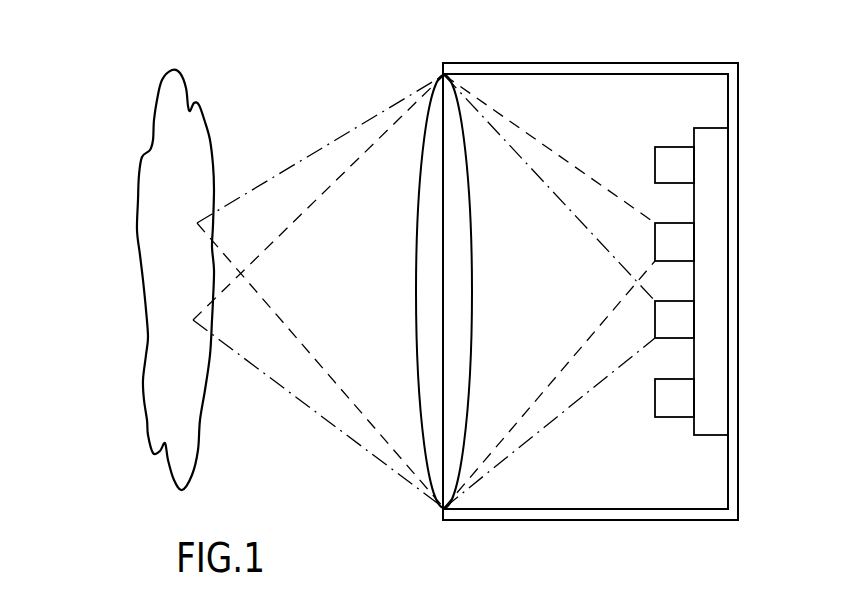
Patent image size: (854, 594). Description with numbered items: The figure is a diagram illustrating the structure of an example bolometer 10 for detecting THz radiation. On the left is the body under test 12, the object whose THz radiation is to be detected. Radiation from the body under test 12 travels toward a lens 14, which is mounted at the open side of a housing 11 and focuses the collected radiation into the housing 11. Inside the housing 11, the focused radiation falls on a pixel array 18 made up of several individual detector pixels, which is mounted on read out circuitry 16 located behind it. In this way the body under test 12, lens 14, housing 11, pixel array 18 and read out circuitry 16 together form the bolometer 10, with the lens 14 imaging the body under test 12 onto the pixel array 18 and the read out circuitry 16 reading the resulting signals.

The bolometer 10 is at (104, 438).
The housing 11 is at (602, 53).
The body under test 12 is at (162, 130).
The lens 14 is at (435, 152).
The read out circuitry 16 is at (713, 193).
The pixel array 18 is at (653, 165).